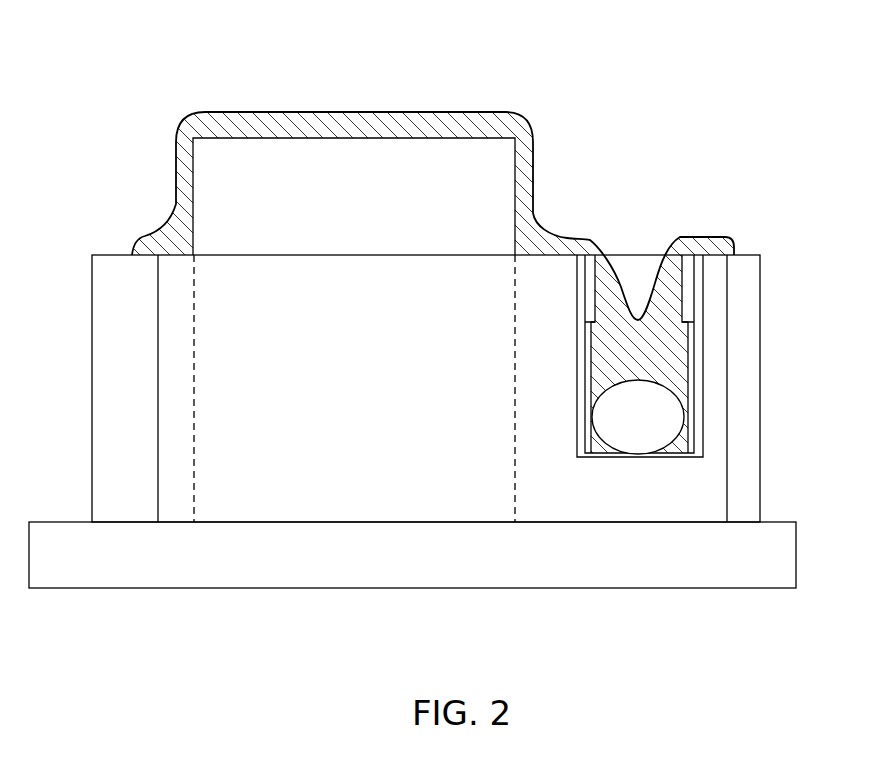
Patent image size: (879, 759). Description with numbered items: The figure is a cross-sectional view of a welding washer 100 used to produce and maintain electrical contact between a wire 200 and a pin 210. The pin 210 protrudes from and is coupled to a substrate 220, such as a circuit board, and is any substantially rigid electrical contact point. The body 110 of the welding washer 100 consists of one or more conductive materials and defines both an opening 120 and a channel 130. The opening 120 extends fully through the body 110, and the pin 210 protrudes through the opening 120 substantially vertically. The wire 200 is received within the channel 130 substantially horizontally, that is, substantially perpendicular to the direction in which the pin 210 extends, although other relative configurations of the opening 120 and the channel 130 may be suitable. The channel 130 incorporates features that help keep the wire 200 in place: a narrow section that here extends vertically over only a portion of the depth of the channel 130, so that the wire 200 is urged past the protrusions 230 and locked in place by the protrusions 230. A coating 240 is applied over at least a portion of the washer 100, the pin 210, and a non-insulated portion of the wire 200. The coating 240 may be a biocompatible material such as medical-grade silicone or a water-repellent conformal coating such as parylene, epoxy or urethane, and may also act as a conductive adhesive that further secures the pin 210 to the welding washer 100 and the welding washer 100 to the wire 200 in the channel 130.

The welding washer 100 is at (158, 88).
The body 110 is at (107, 355).
The opening 120 is at (487, 400).
The channel 130 is at (673, 345).
The wire 200 is at (633, 440).
The pin 210 is at (385, 153).
The substrate 220 is at (137, 575).
The protrusions 230 is at (588, 301).
The coating 240 is at (522, 166).